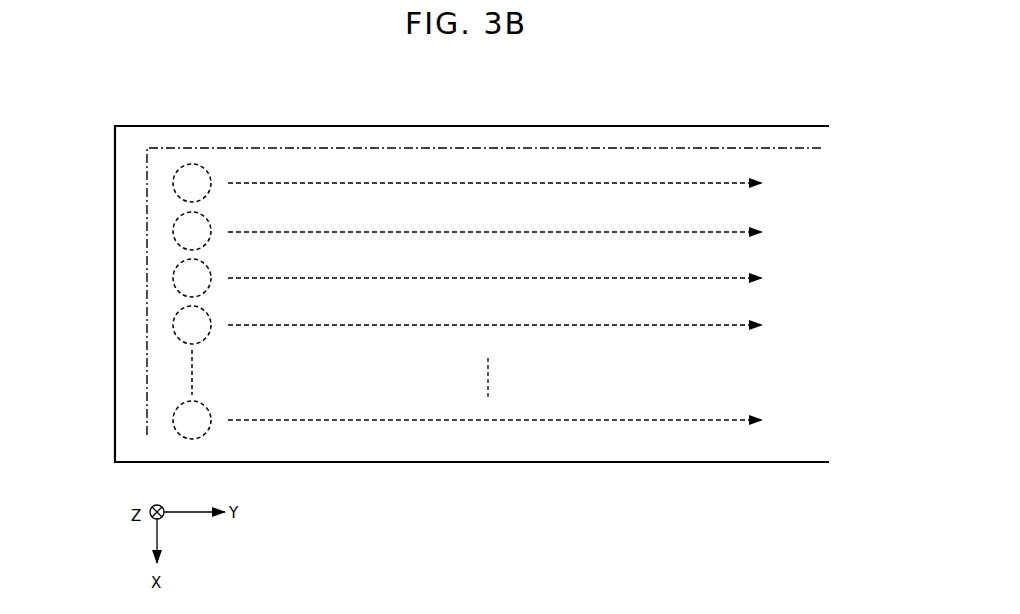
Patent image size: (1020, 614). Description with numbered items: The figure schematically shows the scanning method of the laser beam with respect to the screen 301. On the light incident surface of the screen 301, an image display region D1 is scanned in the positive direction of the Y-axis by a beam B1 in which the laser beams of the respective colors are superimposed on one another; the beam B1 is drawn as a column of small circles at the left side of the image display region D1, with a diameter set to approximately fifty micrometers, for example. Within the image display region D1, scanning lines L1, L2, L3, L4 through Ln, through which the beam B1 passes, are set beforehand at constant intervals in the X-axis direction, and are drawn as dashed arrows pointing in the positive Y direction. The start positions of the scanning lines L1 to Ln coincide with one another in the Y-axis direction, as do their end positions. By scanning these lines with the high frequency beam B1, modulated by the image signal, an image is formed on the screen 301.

The screen 301 is at (233, 125).
The beam B1 is at (173, 178).
The image display region D1 is at (146, 268).
The scanning line L1 is at (512, 184).
The scanning line L2 is at (512, 233).
The scanning line L3 is at (512, 279).
The scanning line L4 is at (512, 326).
The scanning line Ln is at (512, 421).